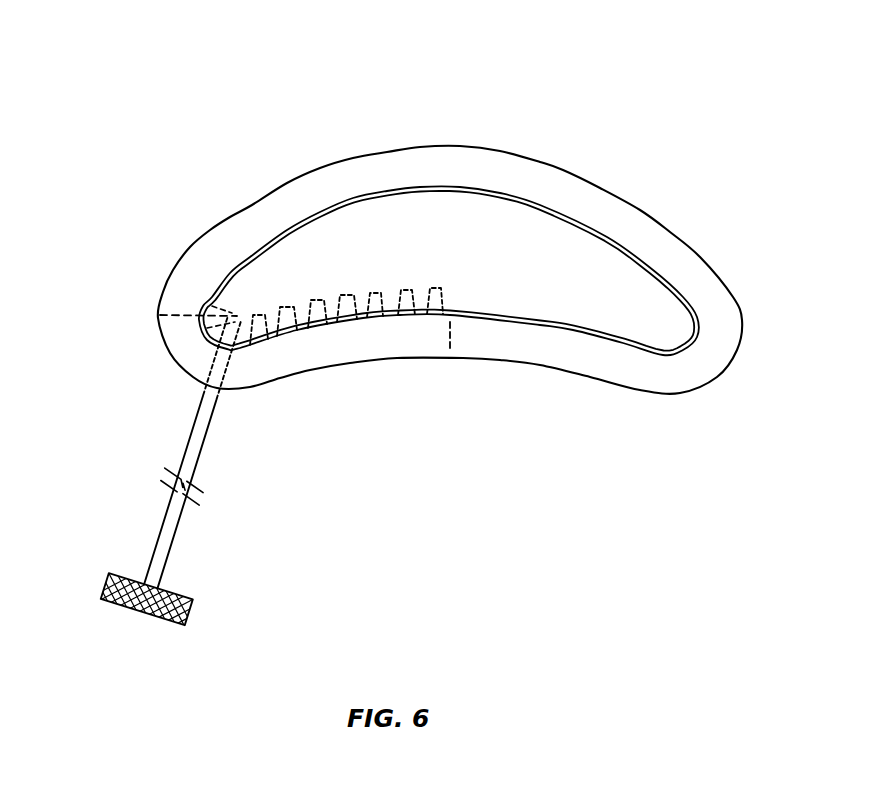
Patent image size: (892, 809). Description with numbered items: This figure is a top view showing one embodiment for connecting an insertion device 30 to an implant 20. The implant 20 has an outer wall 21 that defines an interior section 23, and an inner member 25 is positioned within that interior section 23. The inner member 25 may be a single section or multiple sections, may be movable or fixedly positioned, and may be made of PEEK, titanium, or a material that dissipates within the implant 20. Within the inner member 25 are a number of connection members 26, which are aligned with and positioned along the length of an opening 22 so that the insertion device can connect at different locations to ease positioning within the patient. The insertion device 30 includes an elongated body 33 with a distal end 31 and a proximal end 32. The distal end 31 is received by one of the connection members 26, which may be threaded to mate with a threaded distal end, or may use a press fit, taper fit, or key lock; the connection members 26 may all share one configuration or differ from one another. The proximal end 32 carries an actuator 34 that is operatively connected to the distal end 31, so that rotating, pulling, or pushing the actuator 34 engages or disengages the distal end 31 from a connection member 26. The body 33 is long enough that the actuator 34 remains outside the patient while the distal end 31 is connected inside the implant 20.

The implant 20 is at (498, 112).
The outer wall 21 is at (583, 202).
The opening 22 is at (352, 375).
The interior section 23 is at (668, 278).
The inner member 25 is at (544, 287).
The connection members 26 is at (373, 293).
The insertion device 30 is at (127, 442).
The distal end 31 is at (212, 293).
The proximal end 32 is at (130, 612).
The body 33 is at (208, 445).
The actuator 34 is at (183, 607).